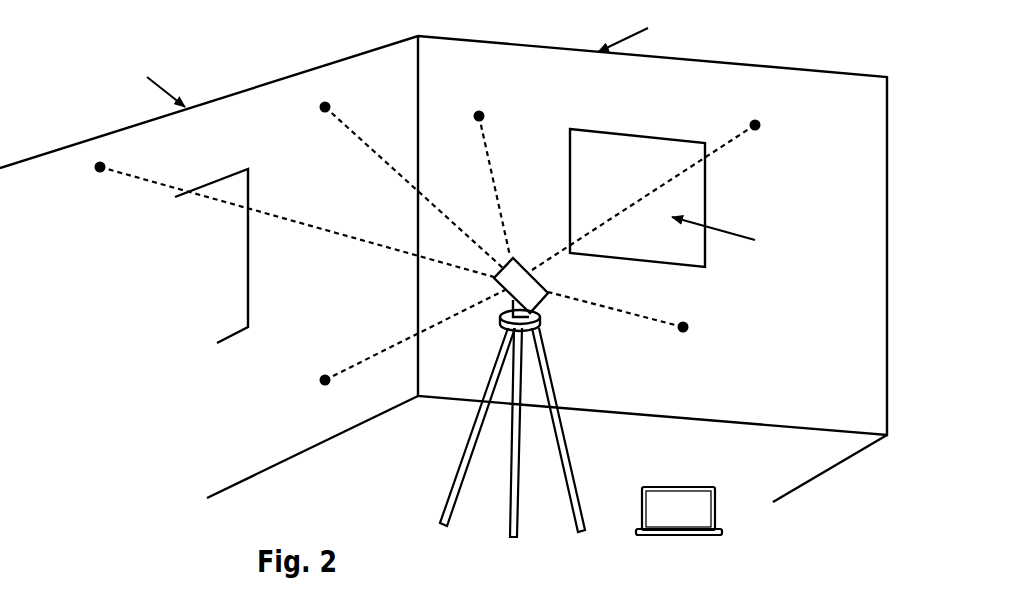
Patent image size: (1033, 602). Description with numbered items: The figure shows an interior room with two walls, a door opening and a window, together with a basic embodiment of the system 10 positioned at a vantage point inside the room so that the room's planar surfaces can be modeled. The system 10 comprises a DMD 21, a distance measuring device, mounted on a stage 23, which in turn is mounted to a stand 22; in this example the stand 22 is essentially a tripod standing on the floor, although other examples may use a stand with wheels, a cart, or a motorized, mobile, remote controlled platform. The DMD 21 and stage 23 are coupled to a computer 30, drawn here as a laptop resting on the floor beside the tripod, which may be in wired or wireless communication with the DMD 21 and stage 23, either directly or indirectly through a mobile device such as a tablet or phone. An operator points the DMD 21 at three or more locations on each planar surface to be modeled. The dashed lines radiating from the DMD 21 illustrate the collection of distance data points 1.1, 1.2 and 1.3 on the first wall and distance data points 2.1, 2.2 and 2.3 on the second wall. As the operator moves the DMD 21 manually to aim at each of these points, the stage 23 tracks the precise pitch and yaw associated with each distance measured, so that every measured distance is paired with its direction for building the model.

The system 10 is at (614, 428).
The distance data point on wall 1 1.1 is at (487, 113).
The distance data point on wall 1 1.2 is at (672, 316).
The distance data point on wall 1 1.3 is at (746, 125).
The distance data point on wall 2 2.1 is at (112, 156).
The distance data point on wall 2 2.2 is at (340, 107).
The distance data point on wall 2 2.3 is at (329, 371).
The DMD 21 is at (542, 305).
The stand 22 is at (508, 529).
The stage 23 is at (507, 319).
The computer 30 is at (659, 529).